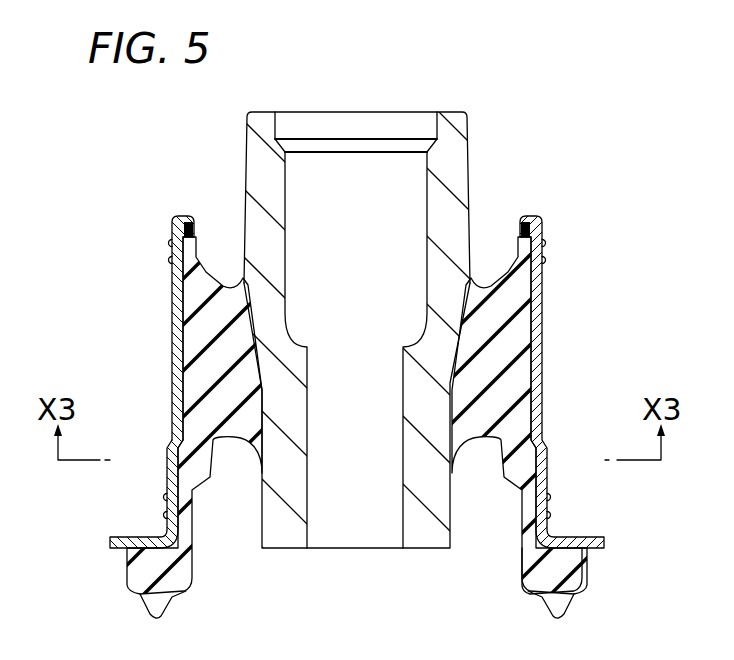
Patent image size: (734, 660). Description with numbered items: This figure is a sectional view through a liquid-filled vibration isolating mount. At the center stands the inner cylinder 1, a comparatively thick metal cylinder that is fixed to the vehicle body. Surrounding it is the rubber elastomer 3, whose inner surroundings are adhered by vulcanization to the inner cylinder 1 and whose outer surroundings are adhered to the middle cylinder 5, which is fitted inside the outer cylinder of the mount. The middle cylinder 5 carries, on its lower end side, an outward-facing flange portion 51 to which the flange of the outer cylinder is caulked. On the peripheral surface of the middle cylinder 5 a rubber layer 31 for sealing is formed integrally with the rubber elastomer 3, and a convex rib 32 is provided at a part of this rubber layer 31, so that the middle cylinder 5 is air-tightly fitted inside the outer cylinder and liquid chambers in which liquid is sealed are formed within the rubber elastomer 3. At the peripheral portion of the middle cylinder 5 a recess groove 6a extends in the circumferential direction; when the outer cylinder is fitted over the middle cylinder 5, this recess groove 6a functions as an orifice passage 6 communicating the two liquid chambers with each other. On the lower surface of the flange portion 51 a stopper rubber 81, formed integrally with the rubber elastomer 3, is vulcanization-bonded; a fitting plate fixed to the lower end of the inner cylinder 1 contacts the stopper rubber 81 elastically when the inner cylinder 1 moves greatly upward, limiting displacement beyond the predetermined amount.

The inner cylinder 1 is at (452, 120).
The rubber elastomer 3 is at (215, 330).
The middle cylinder 5 is at (578, 382).
The orifice passage 6 is at (540, 457).
The recess groove 6a is at (180, 447).
The rubber layer 31 is at (545, 334).
The convex rib 32 is at (547, 262).
The flange portion 51 is at (120, 553).
The stopper rubber 81 is at (557, 563).